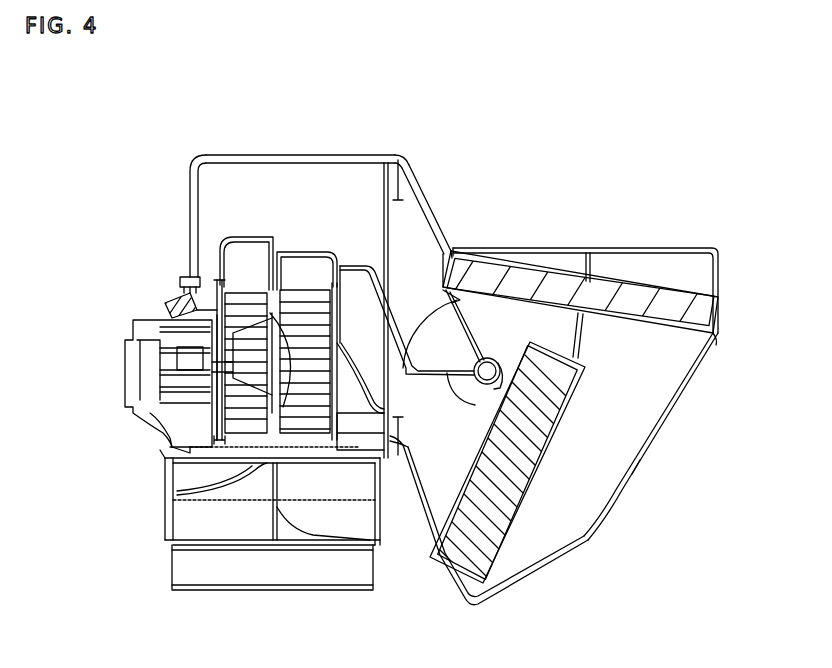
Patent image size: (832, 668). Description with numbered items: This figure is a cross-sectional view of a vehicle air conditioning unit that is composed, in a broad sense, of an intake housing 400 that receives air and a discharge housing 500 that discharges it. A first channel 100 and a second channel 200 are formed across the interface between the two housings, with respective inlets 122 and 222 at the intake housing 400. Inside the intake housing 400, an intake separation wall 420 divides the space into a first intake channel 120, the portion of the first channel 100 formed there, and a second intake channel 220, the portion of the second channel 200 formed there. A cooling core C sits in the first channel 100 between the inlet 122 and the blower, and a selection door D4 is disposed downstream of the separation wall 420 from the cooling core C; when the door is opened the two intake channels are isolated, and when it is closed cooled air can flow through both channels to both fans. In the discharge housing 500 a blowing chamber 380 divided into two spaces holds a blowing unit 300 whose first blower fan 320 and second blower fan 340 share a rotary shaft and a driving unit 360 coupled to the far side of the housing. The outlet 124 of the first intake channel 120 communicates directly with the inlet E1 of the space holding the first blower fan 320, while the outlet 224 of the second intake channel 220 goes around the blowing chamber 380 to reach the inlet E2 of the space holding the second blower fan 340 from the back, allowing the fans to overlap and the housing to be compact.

The discharge housing 500 is at (172, 231).
The second blower fan 340 is at (242, 320).
The blowing chamber 380 is at (253, 235).
The first blower fan 320 is at (305, 330).
The inlet E1 is at (350, 345).
The outlet 224 is at (407, 166).
The second channel 200 is at (414, 230).
The second intake channel 220 is at (423, 260).
The inlet 222 is at (528, 248).
The inlet 122 is at (657, 247).
The intake separation wall 420 is at (581, 338).
The selection door D4 is at (475, 405).
The intake housing 400 is at (680, 428).
The first intake channel 120 is at (632, 448).
The first channel 100 is at (604, 492).
The cooling core C is at (487, 545).
The outlet 124 is at (398, 450).
The inlet E2 is at (217, 302).
The driving unit 360 is at (140, 361).
The blowing unit 300 is at (143, 446).